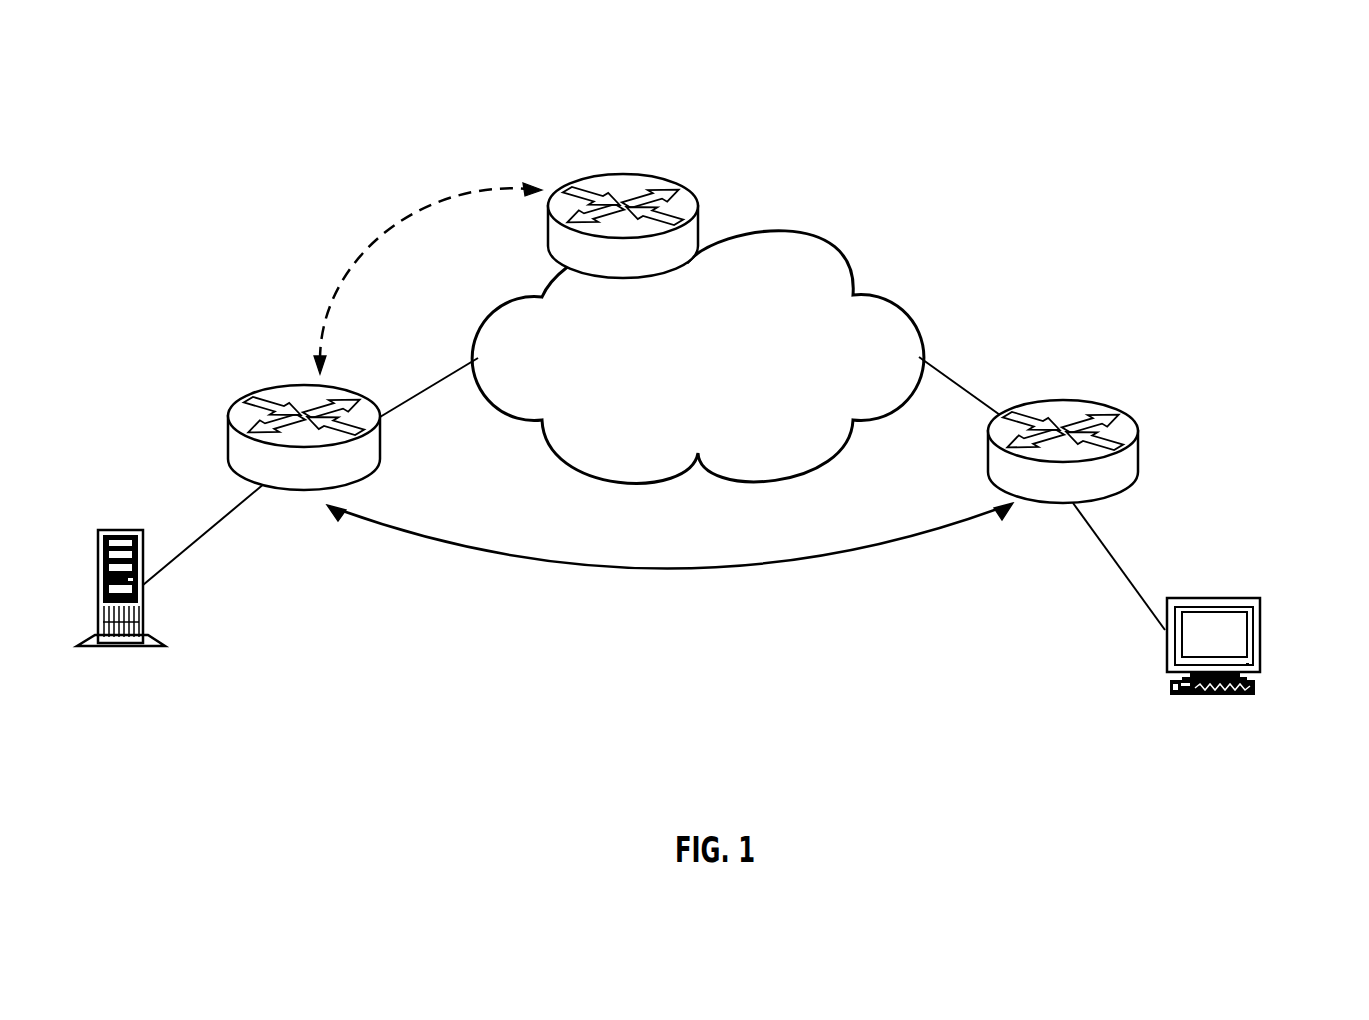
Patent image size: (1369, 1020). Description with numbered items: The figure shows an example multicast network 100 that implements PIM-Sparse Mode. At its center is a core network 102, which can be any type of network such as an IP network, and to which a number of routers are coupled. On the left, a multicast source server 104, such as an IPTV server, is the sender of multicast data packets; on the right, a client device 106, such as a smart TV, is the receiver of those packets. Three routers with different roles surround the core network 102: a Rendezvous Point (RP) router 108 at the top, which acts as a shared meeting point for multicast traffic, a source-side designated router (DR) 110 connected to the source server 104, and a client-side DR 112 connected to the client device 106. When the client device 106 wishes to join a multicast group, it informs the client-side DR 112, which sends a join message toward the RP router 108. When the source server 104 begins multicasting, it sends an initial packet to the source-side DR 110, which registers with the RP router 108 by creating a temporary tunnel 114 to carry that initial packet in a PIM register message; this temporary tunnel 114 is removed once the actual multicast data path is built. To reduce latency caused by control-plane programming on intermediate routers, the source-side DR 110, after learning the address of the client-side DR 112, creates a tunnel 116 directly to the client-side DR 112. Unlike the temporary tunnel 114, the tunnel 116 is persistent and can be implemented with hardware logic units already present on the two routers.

The multicast network 100 is at (182, 122).
The core network 102 is at (712, 379).
The multicast source server 104 is at (118, 647).
The client device 106 is at (1195, 697).
The Rendezvous Point (RP) router 108 is at (648, 125).
The source-side designated router (DR) 110 is at (227, 452).
The client-side designated router (DR) 112 is at (1138, 470).
The temporary tunnel 114 is at (368, 187).
The tunnel 116 is at (707, 566).